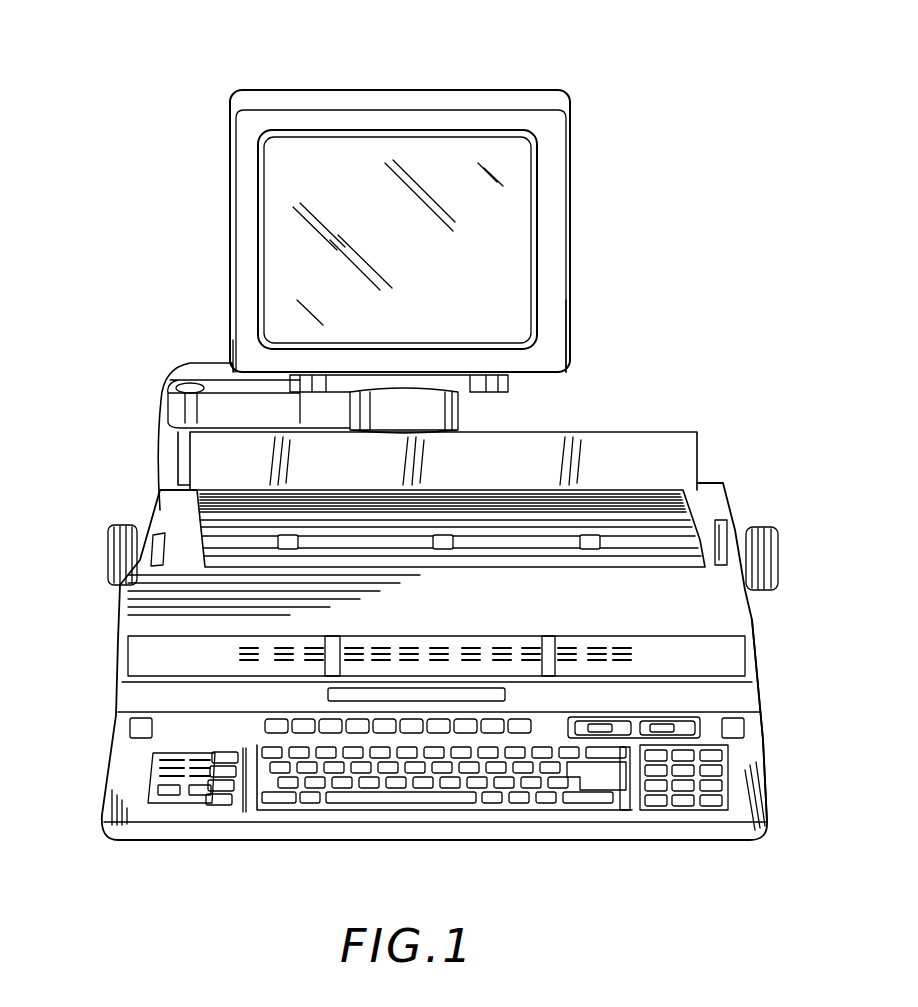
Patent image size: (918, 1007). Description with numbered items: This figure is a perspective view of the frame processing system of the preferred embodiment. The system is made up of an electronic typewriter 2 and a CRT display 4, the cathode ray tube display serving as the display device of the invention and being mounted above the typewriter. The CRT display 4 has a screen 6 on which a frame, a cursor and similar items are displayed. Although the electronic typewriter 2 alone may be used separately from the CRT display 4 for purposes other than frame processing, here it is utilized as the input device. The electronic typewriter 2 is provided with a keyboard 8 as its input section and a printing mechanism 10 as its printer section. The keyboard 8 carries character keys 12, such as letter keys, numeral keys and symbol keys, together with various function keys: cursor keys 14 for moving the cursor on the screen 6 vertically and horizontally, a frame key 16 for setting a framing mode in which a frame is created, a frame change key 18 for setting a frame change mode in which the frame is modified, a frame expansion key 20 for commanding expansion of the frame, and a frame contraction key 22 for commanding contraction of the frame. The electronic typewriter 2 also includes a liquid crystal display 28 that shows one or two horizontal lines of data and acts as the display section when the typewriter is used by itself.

The electronic typewriter 2 is at (689, 420).
The CRT display 4 is at (577, 88).
The screen 6 is at (371, 158).
The keyboard 8 is at (772, 760).
The printing mechanism 10 is at (578, 508).
The character keys 12 is at (418, 790).
The cursor keys 14 is at (668, 806).
The frame key 16 is at (218, 810).
The frame change key 18 is at (207, 786).
The frame expansion key 20 is at (162, 776).
The frame contraction key 22 is at (157, 762).
The liquid crystal display 28 is at (430, 690).